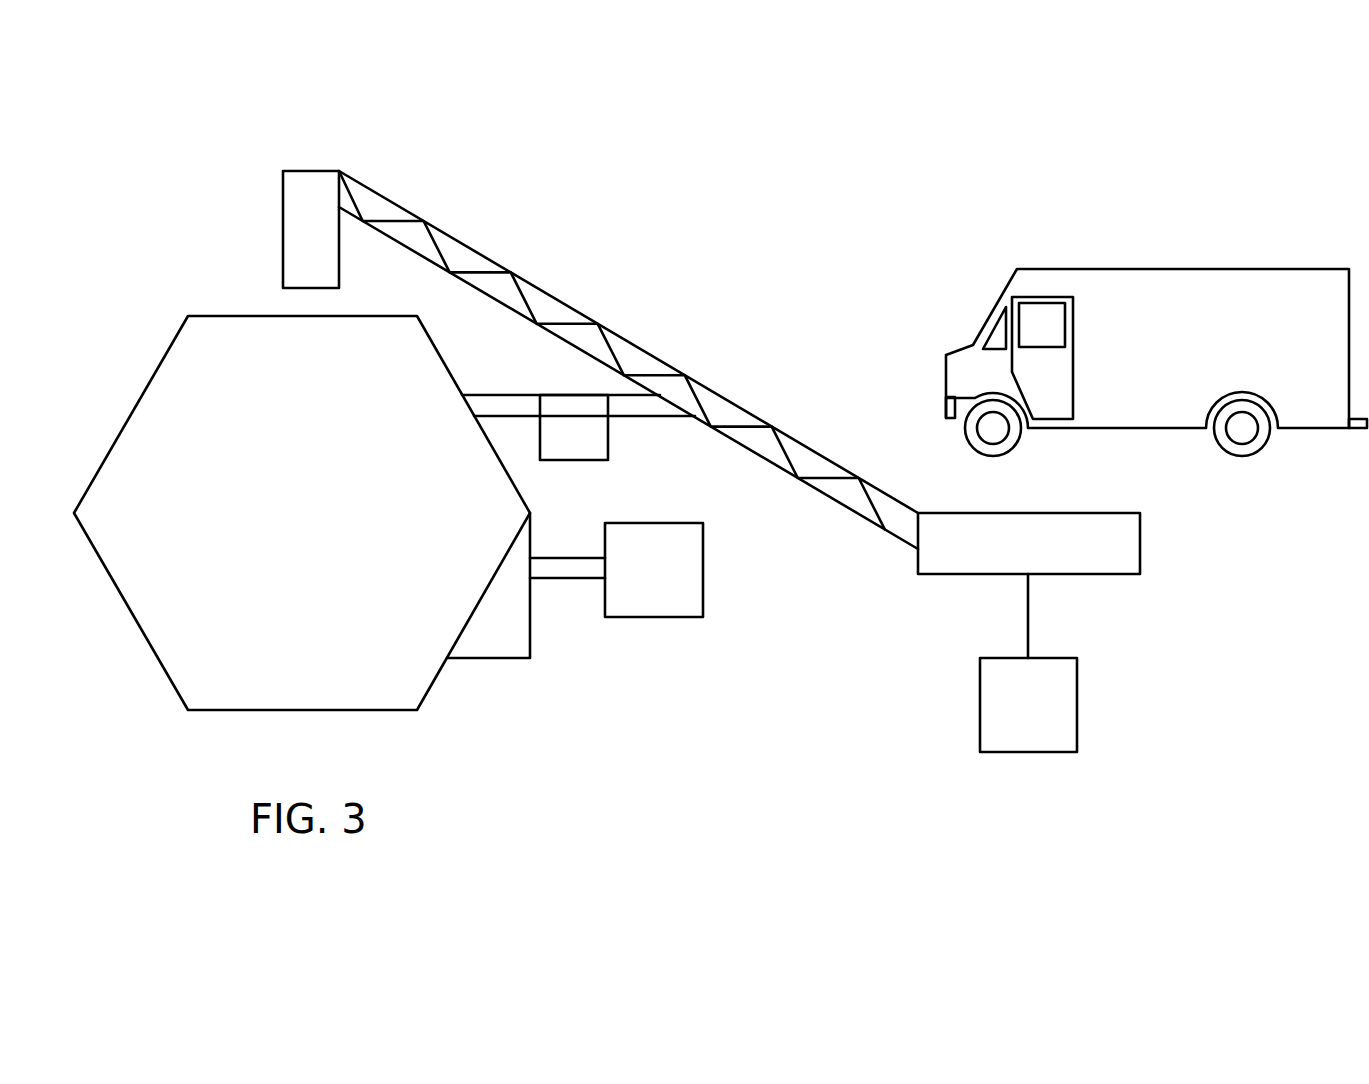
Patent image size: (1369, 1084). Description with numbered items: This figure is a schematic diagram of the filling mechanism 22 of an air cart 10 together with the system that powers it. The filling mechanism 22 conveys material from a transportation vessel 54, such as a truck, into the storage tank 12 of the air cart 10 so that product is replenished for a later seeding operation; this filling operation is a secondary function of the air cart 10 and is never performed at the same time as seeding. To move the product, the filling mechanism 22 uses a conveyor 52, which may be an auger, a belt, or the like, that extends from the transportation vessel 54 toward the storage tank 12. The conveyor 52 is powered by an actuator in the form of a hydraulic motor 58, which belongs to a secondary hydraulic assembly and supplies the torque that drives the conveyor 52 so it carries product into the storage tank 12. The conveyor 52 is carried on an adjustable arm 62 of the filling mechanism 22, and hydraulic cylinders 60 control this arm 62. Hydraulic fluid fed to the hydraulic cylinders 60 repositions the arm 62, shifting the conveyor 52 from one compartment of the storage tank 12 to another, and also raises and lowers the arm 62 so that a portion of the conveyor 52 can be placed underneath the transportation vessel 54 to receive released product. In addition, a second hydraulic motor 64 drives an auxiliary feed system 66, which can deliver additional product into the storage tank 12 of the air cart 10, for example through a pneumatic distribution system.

The air cart 10 is at (280, 484).
The storage tank 12 is at (130, 613).
The filling mechanism 22 is at (739, 372).
The conveyor 52 is at (425, 243).
The transportation vessel 54 is at (1188, 268).
The hydraulic motor 58 is at (1028, 752).
The hydraulic cylinders 60 is at (608, 434).
The adjustable arm 62 is at (737, 403).
The second hydraulic motor 64 is at (653, 617).
The auxiliary feed system 66 is at (488, 660).